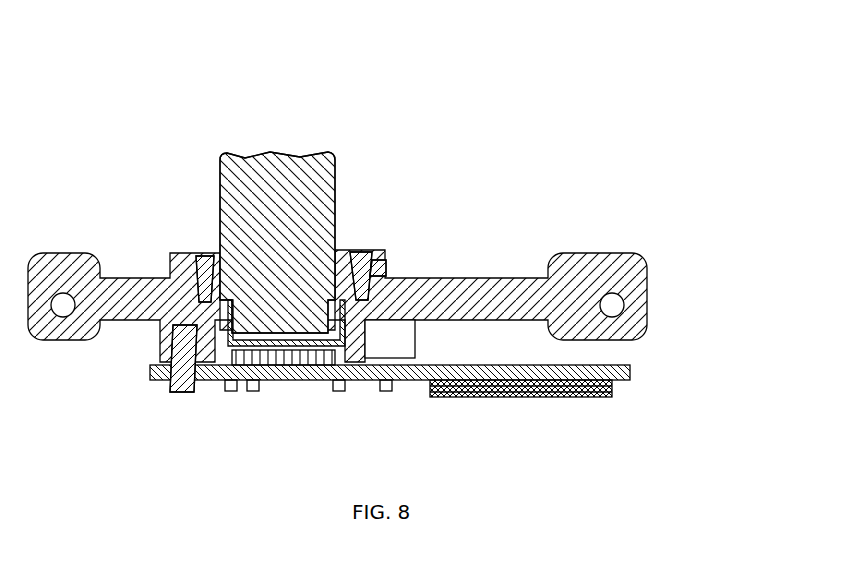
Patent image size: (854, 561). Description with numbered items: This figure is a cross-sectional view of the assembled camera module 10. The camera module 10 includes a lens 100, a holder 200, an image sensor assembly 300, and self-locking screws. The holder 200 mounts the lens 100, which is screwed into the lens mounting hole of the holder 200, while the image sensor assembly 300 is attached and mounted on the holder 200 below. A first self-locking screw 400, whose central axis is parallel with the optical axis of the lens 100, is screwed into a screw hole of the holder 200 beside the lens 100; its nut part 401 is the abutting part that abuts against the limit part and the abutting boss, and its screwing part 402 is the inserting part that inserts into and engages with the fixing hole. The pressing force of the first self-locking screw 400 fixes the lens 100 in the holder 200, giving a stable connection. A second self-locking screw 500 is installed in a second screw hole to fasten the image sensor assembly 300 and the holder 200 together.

The camera module 10 is at (83, 88).
The lens 100 is at (283, 150).
The holder 200 is at (600, 253).
The image sensor assembly 300 is at (630, 380).
The first self-locking screw 400 is at (434, 251).
The nut part 401 is at (372, 258).
The screwing part 402 is at (386, 266).
The second self-locking screw 500 is at (180, 388).